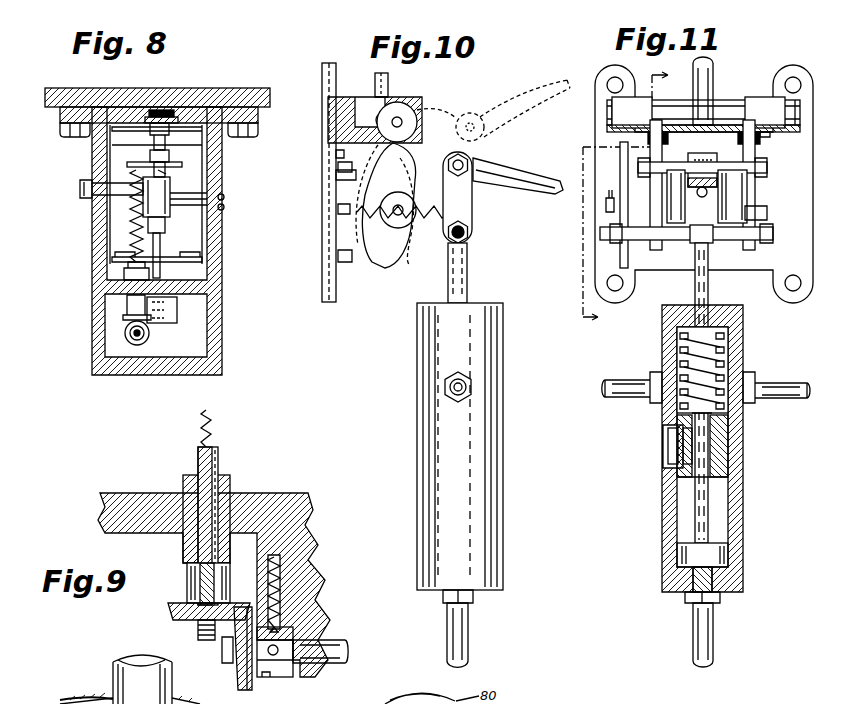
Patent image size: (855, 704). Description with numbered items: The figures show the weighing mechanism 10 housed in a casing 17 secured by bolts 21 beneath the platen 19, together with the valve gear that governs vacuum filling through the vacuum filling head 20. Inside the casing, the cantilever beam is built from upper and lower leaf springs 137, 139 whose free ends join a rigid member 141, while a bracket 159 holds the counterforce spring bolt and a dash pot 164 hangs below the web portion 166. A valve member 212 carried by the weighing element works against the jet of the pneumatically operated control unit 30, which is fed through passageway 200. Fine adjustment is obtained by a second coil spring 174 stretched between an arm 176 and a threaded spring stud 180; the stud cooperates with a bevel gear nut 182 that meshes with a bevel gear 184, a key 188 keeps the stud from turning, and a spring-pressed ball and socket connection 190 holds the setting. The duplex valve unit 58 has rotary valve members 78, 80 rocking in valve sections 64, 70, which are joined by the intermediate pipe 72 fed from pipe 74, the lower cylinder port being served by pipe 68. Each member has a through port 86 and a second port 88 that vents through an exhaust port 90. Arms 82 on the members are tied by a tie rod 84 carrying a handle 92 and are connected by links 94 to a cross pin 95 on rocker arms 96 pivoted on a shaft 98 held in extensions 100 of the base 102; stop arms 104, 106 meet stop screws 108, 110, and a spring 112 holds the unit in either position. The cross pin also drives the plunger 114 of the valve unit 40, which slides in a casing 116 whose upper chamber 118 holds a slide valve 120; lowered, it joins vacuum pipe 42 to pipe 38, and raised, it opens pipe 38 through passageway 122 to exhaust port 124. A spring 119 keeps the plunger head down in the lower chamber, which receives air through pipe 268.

In FIG. 8, the weighing mechanism 10 is at (74, 80).
In FIG. 11, the weighing mechanism 10 is at (620, 195).
In FIG. 8, the casing 17 is at (92, 322).
In FIG. 8, the platen 19 is at (263, 88).
In FIG. 9, the vacuum filling head 20 is at (112, 668).
In FIG. 9, the bolts 21 is at (80, 700).
In FIG. 8, the pneumatically operated control unit 30 is at (178, 188).
In FIG. 10, the pipe 38 is at (471, 385).
In FIG. 11, the pipe 38 is at (635, 380).
In FIG. 10, the valve unit 40 is at (452, 485).
In FIG. 11, the valve unit 40 is at (700, 486).
In FIG. 11, the vacuum pipe 42 is at (770, 385).
In FIG. 11, the duplex valve unit 58 is at (768, 66).
In FIG. 11, the valve section 64 is at (762, 97).
In FIG. 11, the pipe 68 is at (630, 120).
In FIG. 10, the valve section 70 is at (412, 108).
In FIG. 11, the valve section 70 is at (672, 100).
In FIG. 11, the intermediate pipe 72 is at (696, 135).
In FIG. 10, the pipe 74 is at (388, 85).
In FIG. 11, the pipe 74 is at (713, 70).
In FIG. 11, the rotary valve member 78 is at (760, 136).
In FIG. 10, the rotary valve member 80 is at (418, 118).
In FIG. 11, the rotary valve member 80 is at (650, 136).
In FIG. 10, the arm 82 is at (458, 124).
In FIG. 11, the arm 82 is at (650, 180).
In FIG. 11, the tie rod 84 is at (760, 162).
In FIG. 10, the through port 86 is at (390, 117).
In FIG. 10, the second port 88 is at (375, 98).
In FIG. 10, the exhaust port 90 is at (328, 108).
In FIG. 10, the handle 92 is at (546, 182).
In FIG. 11, the handle 92 is at (698, 155).
In FIG. 10, the links 94 is at (474, 214).
In FIG. 11, the links 94 is at (667, 214).
In FIG. 10, the cross pin 95 is at (470, 238).
In FIG. 11, the cross pin 95 is at (725, 250).
In FIG. 10, the rocker arms 96 is at (424, 240).
In FIG. 11, the rocker arms 96 is at (610, 233).
In FIG. 10, the shaft 98 is at (472, 198).
In FIG. 11, the shaft 98 is at (690, 242).
In FIG. 10, the extensions 100 is at (352, 224).
In FIG. 11, the extensions 100 is at (767, 216).
In FIG. 10, the base 102 is at (325, 300).
In FIG. 11, the base 102 is at (600, 290).
In FIG. 10, the stop arm 104 is at (345, 151).
In FIG. 10, the stop arm 106 is at (372, 268).
In FIG. 10, the stop screw 108 is at (348, 175).
In FIG. 10, the stop screw 110 is at (345, 252).
In FIG. 10, the spring 112 is at (348, 199).
In FIG. 11, the spring 112 is at (606, 206).
In FIG. 10, the plunger 114 is at (467, 276).
In FIG. 11, the plunger 114 is at (708, 522).
In FIG. 10, the casing 116 is at (503, 460).
In FIG. 11, the casing 116 is at (743, 471).
In FIG. 11, the upper chamber 118 is at (715, 350).
In FIG. 11, the spring 119 is at (678, 343).
In FIG. 11, the slide valve 120 is at (722, 445).
In FIG. 11, the passageway 122 is at (668, 447).
In FIG. 11, the exhaust port 124 is at (648, 436).
In FIG. 8, the upper cantilever leaf springs 137 is at (118, 128).
In FIG. 8, the lower cantilever leaf springs 139 is at (112, 259).
In FIG. 8, the rigid member 141 is at (190, 176).
In FIG. 8, the bracket 159 is at (172, 118).
In FIG. 8, the dash pot 164 is at (177, 310).
In FIG. 9, the web portion 166 is at (140, 493).
In FIG. 8, the second coil spring 174 is at (133, 232).
In FIG. 9, the second coil spring 174 is at (207, 414).
In FIG. 8, the arm 176 is at (127, 164).
In FIG. 9, the threaded spring stud 180 is at (200, 455).
In FIG. 8, the bevel gear nut 182 is at (125, 316).
In FIG. 9, the bevel gear nut 182 is at (175, 610).
In FIG. 8, the bevel gear 184 is at (149, 337).
In FIG. 9, the bevel gear 184 is at (233, 680).
In FIG. 9, the key 188 is at (232, 493).
In FIG. 9, the spring-pressed ball and socket connection 190 is at (282, 610).
In FIG. 8, the passageway 200 is at (168, 173).
In FIG. 8, the valve member 212 is at (169, 156).
In FIG. 10, the pipe 268 is at (468, 634).
In FIG. 11, the pipe 268 is at (713, 632).